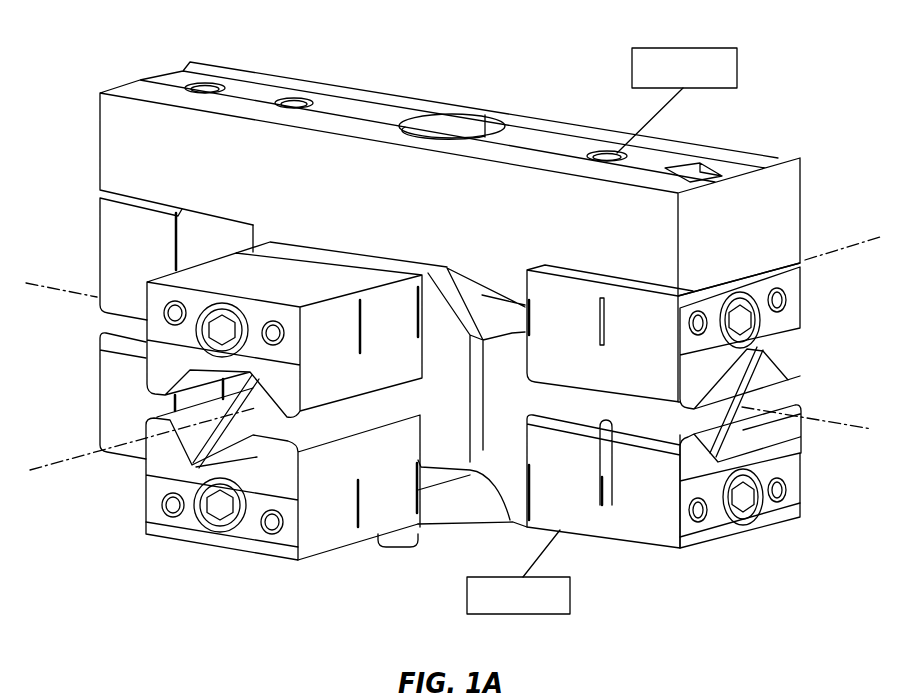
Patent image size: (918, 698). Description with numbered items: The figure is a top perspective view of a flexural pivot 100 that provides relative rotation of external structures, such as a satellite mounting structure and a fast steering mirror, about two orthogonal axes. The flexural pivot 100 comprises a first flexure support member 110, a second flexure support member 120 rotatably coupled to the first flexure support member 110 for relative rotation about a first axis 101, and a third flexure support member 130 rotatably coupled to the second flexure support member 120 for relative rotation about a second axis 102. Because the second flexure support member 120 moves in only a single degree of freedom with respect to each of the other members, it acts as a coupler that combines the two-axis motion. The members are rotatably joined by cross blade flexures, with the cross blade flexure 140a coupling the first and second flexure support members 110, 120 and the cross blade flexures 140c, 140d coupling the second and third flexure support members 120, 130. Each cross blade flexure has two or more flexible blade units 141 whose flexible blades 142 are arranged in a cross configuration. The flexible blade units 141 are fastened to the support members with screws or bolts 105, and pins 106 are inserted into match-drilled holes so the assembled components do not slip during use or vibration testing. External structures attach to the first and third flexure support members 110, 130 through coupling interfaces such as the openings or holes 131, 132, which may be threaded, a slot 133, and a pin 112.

The flexural pivot 100 is at (559, 48).
The first axis 101 is at (63, 459).
The second axis 102 is at (848, 422).
The screws or bolts 105 is at (203, 318).
The pins 106 is at (168, 314).
The first flexure support member 110 is at (447, 497).
The pin 112 is at (412, 548).
The second flexure support member 120 is at (505, 490).
The third flexure support member 130 is at (695, 150).
The opening or hole 131 is at (462, 123).
The opening or hole 132 is at (294, 104).
The slot 133 is at (705, 167).
The cross blade flexure 140a is at (126, 493).
The cross blade flexure 140c is at (824, 457).
The cross blade flexure 140d is at (84, 350).
The flexible blade unit 141 is at (222, 560).
The flexible blades 142 is at (238, 427).